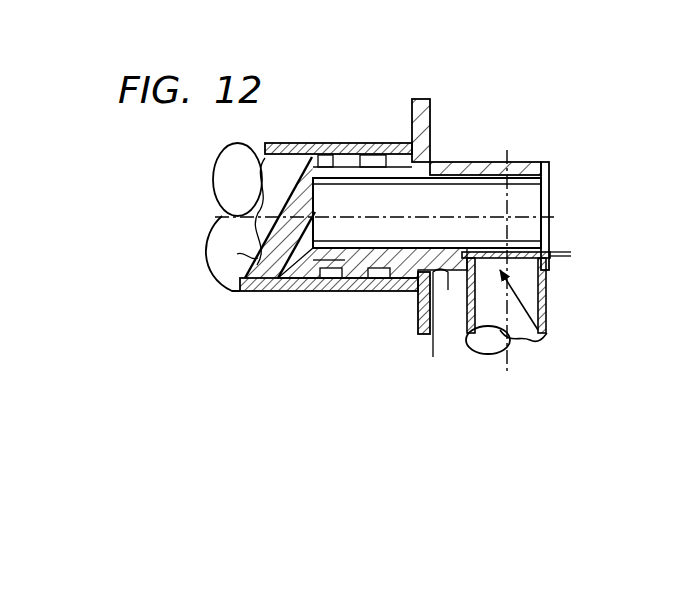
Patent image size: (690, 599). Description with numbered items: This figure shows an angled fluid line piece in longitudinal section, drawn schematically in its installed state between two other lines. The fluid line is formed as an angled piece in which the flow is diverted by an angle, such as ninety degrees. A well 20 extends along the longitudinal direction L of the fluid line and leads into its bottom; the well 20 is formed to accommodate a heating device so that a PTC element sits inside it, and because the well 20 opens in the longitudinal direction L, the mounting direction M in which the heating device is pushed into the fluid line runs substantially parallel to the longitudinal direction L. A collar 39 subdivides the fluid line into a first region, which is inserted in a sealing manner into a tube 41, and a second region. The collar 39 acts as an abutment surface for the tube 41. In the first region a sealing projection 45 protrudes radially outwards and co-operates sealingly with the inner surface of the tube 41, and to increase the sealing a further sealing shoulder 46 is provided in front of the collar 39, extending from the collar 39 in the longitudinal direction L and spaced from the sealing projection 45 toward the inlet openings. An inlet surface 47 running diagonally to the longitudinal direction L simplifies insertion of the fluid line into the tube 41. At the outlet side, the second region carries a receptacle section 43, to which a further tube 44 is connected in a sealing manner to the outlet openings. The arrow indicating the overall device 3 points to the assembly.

The steering device 3 is at (555, 56).
The well 20 is at (441, 228).
The collar 39 is at (418, 334).
The tube 41 is at (283, 293).
The receptacle section 43 is at (547, 336).
The further tube 44 is at (602, 296).
The sealing projection 45 is at (357, 143).
The sealing shoulder 46 is at (398, 143).
The inlet surface 47 is at (240, 253).
The longitudinal direction L is at (540, 212).
The mounting direction M is at (565, 218).